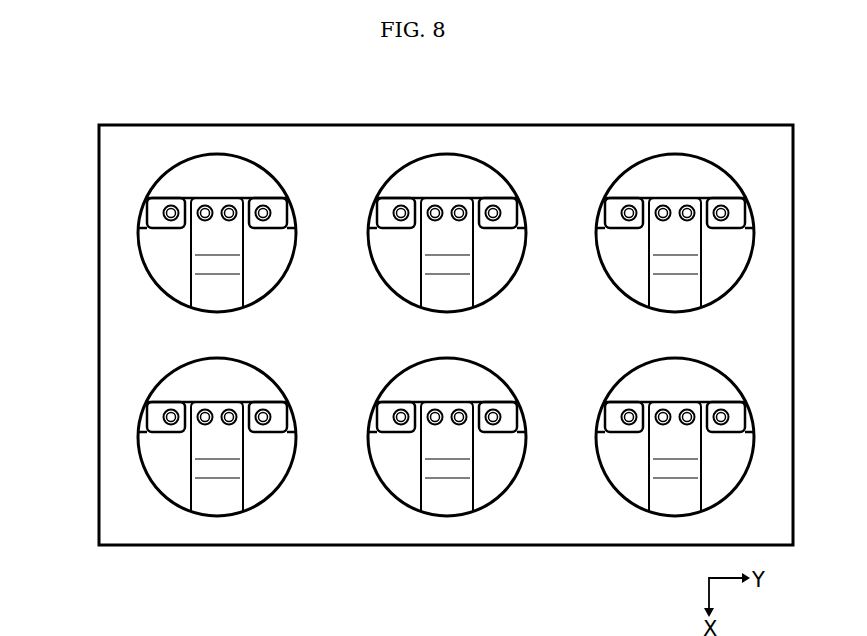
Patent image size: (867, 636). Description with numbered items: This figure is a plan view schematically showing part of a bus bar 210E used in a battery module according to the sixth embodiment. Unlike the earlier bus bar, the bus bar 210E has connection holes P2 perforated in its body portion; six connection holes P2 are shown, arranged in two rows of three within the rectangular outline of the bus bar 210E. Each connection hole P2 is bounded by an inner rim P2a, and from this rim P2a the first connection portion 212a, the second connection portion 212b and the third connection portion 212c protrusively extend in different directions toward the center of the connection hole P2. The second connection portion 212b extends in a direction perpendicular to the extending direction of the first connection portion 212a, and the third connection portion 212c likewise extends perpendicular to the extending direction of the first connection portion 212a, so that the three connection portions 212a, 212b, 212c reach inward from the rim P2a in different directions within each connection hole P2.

The bus bar 210E is at (122, 115).
The connection hole P2 is at (214, 174).
The inner rim of the connection hole P2a is at (267, 176).
The second connection portion 212b is at (148, 203).
The third connection portion 212c is at (205, 247).
The first connection portion 212a is at (267, 228).